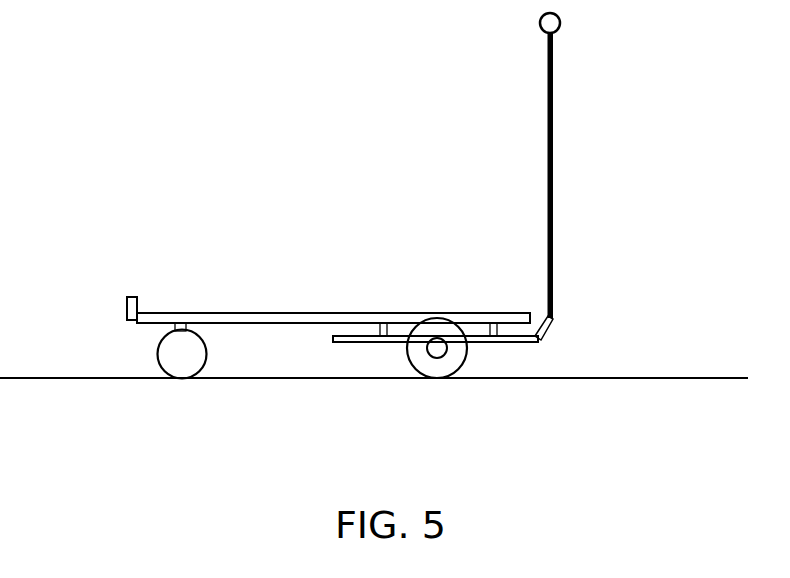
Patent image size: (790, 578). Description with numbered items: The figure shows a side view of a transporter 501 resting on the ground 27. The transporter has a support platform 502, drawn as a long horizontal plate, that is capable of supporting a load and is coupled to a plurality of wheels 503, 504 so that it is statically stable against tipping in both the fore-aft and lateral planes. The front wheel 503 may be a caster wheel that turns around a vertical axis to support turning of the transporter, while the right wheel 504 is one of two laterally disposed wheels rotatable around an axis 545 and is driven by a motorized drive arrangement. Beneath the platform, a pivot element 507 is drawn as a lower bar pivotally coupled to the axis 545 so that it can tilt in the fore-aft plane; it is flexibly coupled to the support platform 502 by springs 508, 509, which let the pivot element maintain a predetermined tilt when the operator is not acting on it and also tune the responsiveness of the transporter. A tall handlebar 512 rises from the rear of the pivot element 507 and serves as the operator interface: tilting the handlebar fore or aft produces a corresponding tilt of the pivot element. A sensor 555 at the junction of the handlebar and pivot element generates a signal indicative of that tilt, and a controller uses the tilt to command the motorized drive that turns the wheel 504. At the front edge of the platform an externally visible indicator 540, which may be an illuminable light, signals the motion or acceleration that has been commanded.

The ground surface 27 is at (735, 377).
The transporter 501 is at (636, 233).
The support platform 502 is at (242, 313).
The wheel 503 is at (161, 370).
The right wheel 504 is at (418, 373).
The pivot element 507 is at (510, 343).
The spring 508 is at (383, 322).
The spring 509 is at (493, 322).
The handlebar 512 is at (554, 54).
The externally visible indicator 540 is at (127, 301).
The axis 545 is at (442, 353).
The sensor 555 is at (540, 340).